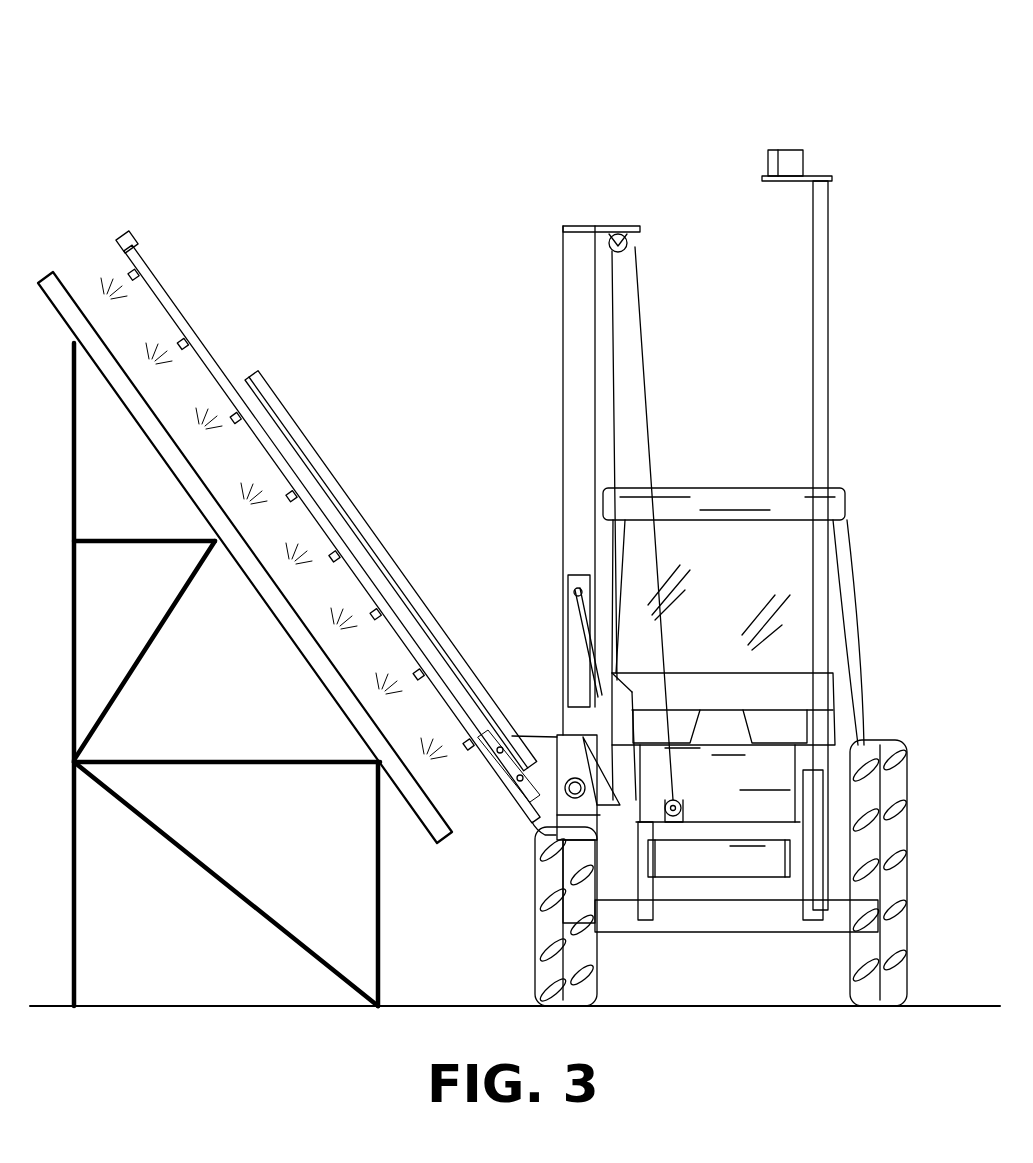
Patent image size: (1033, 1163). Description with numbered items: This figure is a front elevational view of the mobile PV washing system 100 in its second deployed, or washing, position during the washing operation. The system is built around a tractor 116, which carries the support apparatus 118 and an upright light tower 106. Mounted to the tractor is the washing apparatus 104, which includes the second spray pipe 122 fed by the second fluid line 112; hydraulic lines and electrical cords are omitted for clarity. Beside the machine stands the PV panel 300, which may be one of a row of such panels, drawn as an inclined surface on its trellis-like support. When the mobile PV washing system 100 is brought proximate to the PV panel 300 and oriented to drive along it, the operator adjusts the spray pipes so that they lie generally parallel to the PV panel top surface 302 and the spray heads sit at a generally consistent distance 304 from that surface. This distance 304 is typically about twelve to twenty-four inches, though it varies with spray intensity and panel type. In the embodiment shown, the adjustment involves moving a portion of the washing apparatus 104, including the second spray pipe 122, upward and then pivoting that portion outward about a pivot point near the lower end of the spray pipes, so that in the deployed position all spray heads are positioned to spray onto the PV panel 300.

The mobile PV washing system 100 is at (737, 84).
The washing apparatus 104 is at (234, 262).
The light tower 106 is at (813, 318).
The second fluid line 112 is at (538, 817).
The tractor 116 is at (695, 490).
The support apparatus 118 is at (666, 934).
The second spray pipe 122 is at (228, 364).
The PV panel 300 is at (440, 845).
The PV panel top surface 302 is at (203, 478).
The distance 304 is at (203, 398).